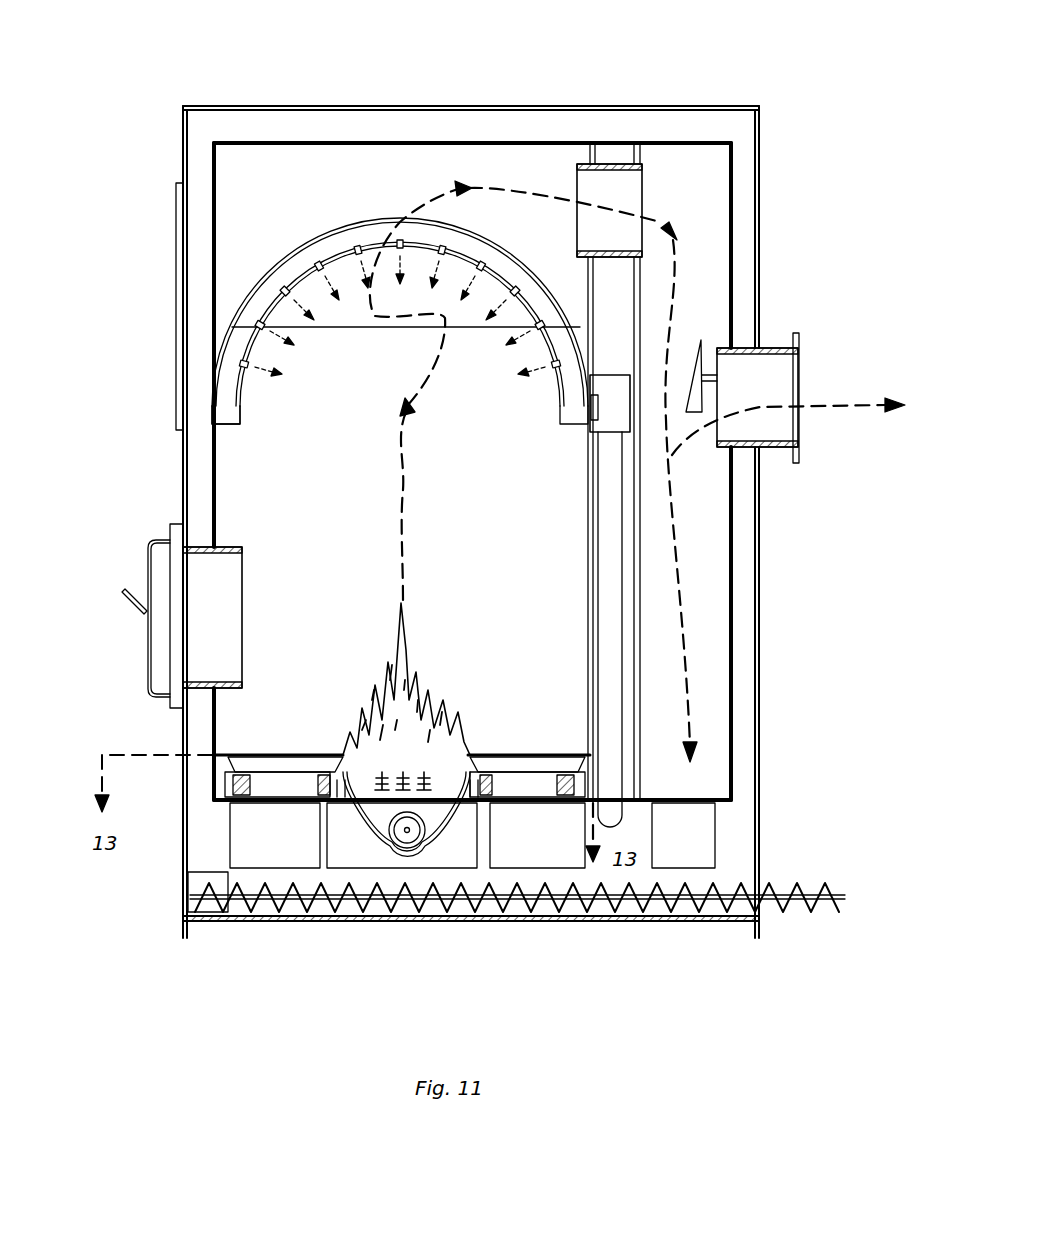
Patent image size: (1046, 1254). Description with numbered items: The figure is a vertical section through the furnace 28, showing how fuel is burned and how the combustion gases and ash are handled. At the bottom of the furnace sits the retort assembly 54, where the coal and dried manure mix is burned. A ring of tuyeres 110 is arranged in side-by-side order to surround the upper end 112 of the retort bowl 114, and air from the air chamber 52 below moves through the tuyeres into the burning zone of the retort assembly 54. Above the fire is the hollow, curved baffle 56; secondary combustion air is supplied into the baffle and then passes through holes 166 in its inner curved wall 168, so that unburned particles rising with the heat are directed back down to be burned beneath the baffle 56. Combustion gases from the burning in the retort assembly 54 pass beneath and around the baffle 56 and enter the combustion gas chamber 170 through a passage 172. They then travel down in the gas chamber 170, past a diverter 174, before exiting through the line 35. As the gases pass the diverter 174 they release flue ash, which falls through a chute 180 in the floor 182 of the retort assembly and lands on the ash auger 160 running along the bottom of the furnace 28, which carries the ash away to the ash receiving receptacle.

The furnace 28 is at (760, 140).
The combustion gas chamber 170 is at (731, 226).
The baffle 56 is at (322, 250).
The holes 166 is at (278, 338).
The inner curved wall 168 is at (238, 405).
The passage 172 is at (642, 188).
The diverter 174 is at (700, 380).
The line (conduit) 35 is at (768, 427).
The retort assembly 54 is at (336, 692).
The ring of tuyeres 110 is at (453, 755).
The upper end of retort bowl 112 is at (358, 800).
The retort bowl 114 is at (388, 820).
The air chamber 52 is at (440, 855).
The chute 180 is at (692, 822).
The floor 182 is at (718, 855).
The ash auger 160 is at (790, 905).